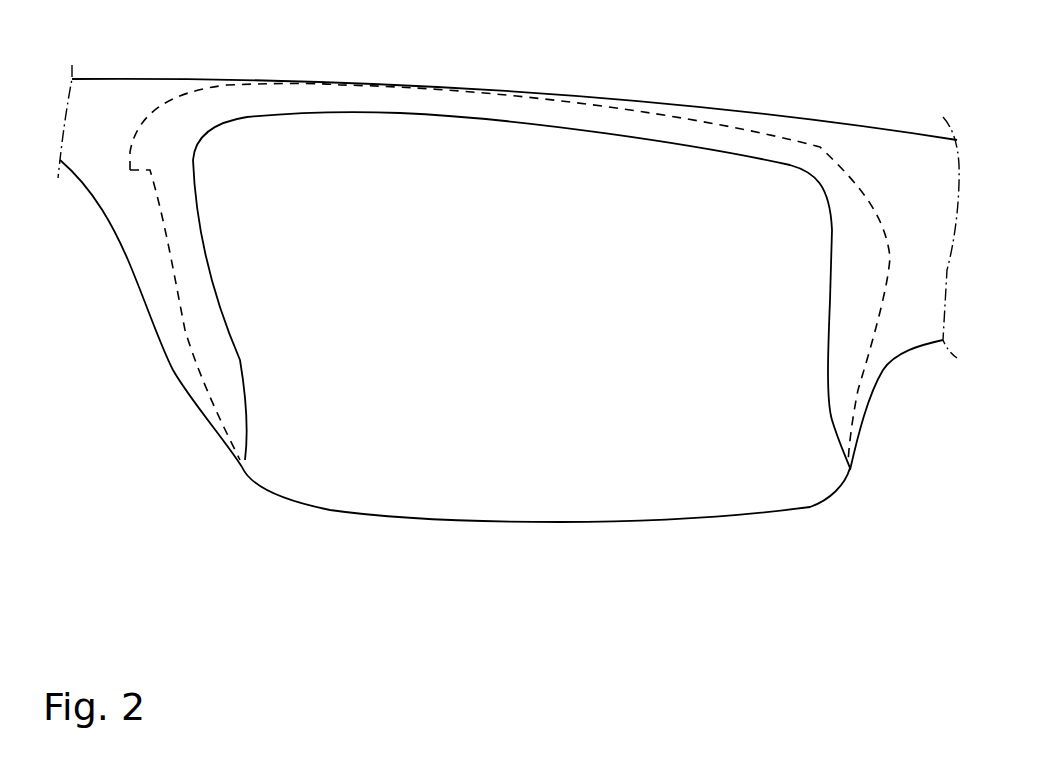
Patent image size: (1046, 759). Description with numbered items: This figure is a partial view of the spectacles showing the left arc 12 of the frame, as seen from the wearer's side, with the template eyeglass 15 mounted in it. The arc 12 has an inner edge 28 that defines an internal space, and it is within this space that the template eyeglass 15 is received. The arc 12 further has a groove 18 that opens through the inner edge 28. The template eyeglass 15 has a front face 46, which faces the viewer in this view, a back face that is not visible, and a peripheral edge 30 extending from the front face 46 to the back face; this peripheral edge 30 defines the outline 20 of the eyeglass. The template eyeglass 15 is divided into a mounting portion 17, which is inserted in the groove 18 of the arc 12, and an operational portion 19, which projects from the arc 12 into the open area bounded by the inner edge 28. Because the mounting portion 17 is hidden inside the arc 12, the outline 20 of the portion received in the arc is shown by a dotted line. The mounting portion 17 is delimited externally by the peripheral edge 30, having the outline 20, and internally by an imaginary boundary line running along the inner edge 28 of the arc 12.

The arc 12 is at (135, 272).
The template eyeglass 15 is at (452, 522).
The mounting portion 17 is at (827, 167).
The groove 18 is at (542, 132).
The operational portion 19 is at (805, 308).
The outline 20 is at (882, 228).
The inner edge 28 is at (400, 115).
The peripheral edge 30 is at (733, 525).
The front face 46 is at (503, 332).